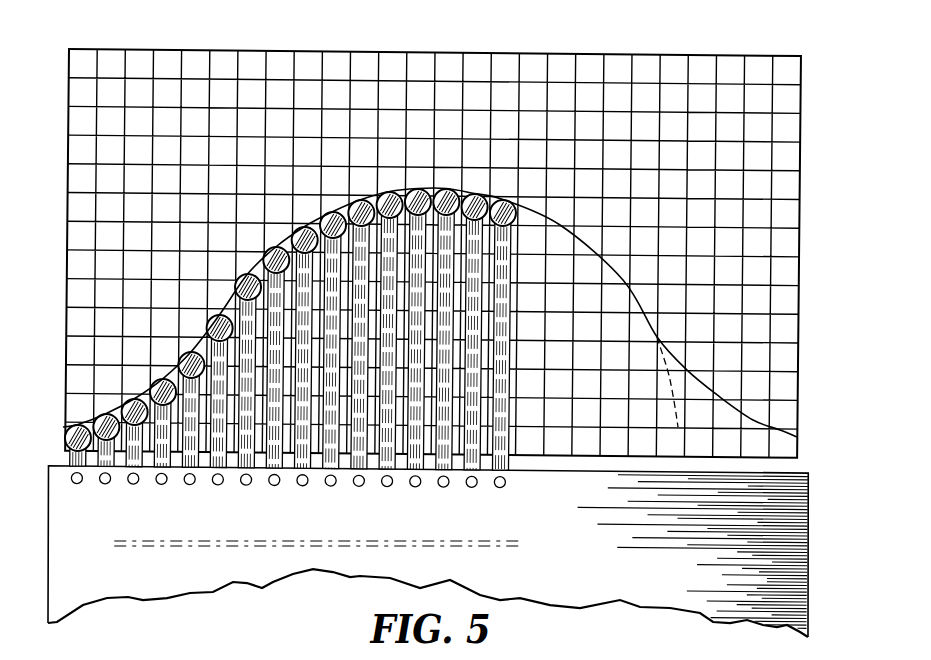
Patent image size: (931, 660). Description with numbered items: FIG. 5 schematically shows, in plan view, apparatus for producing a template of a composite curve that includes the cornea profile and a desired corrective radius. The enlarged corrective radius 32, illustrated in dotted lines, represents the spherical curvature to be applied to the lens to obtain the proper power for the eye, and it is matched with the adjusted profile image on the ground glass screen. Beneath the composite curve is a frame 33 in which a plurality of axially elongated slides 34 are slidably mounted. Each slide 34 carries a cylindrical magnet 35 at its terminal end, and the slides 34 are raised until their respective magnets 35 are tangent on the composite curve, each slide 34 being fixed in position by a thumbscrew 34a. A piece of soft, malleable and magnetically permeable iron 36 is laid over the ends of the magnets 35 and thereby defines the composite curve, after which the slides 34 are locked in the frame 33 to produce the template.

The corrective radius 32 is at (676, 377).
The frame 33 is at (822, 513).
The slides 34 is at (106, 483).
The thumbscrew 34a is at (193, 484).
The cylindrical magnet 35 is at (69, 440).
The magnetically permeable iron 36 is at (183, 367).